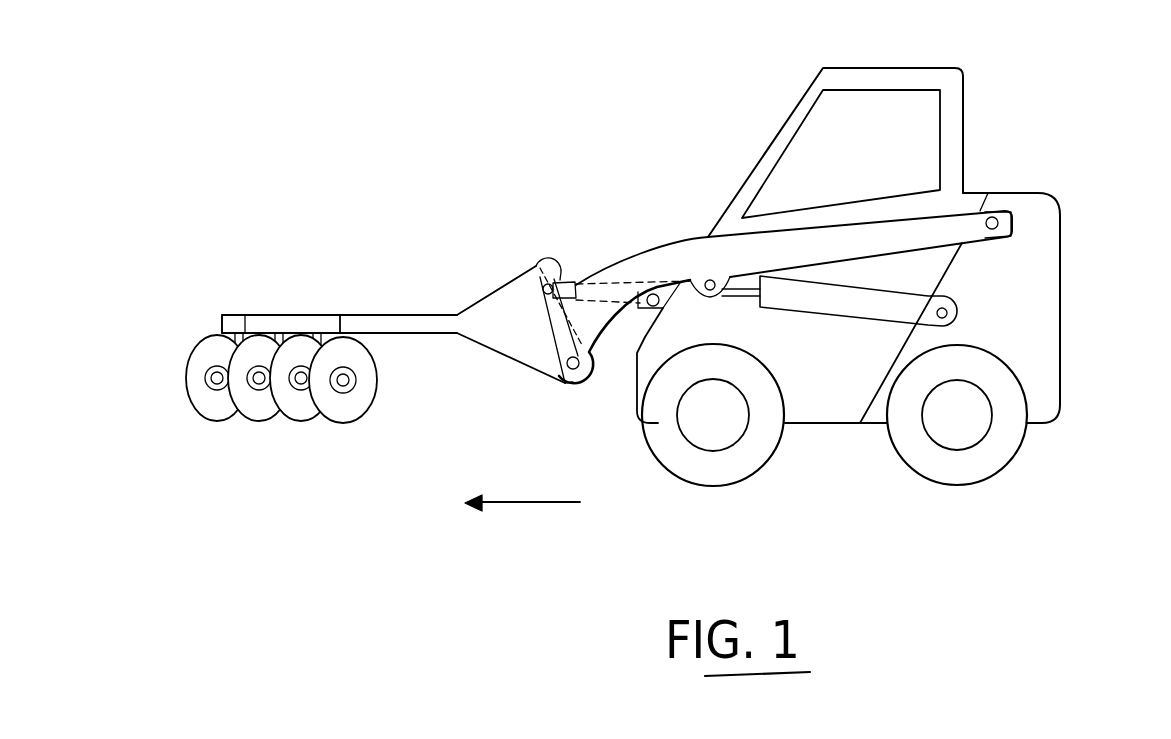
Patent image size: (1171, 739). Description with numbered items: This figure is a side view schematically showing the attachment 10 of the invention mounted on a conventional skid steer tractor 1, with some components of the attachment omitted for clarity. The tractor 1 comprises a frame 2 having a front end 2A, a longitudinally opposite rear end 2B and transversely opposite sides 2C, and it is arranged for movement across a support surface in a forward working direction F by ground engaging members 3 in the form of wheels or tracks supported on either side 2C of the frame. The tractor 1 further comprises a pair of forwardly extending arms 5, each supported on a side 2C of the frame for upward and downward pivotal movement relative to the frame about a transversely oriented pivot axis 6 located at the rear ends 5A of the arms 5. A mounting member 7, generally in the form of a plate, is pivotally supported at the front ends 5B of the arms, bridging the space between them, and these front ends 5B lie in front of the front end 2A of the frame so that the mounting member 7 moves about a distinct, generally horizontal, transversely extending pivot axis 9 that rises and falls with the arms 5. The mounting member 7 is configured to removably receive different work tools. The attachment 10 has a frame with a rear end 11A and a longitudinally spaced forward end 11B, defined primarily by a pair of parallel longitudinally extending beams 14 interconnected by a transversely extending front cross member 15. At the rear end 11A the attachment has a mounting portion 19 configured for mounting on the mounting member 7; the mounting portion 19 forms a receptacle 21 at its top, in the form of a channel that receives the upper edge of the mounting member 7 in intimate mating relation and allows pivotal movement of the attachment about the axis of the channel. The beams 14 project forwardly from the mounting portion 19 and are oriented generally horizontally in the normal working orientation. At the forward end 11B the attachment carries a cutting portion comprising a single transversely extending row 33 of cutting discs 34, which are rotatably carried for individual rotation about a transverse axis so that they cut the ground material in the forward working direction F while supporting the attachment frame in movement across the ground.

The skid steer tractor 1 is at (727, 126).
The frame 2 is at (818, 478).
The front end 2A is at (634, 412).
The rear end 2B is at (1061, 346).
The side 2C is at (1023, 325).
The ground engaging members 3 is at (1019, 455).
The arms 5 is at (659, 241).
The rear ends of the arms 5A is at (1016, 223).
The front ends of the arms 5B is at (575, 385).
The pivot axis 6 is at (995, 218).
The mounting member 7 is at (563, 279).
The pivot axis 9 is at (588, 362).
The attachment 10 is at (384, 254).
The rear end of the frame 11A is at (545, 255).
The forward end of the frame 11B is at (222, 317).
The beams 14 is at (416, 327).
The front cross member 15 is at (262, 318).
The mounting portion 19 is at (549, 315).
The receptacle 21 is at (548, 263).
The row of cutting discs 33 is at (380, 383).
The cutting discs 34 is at (365, 420).
The forward working direction F is at (527, 504).